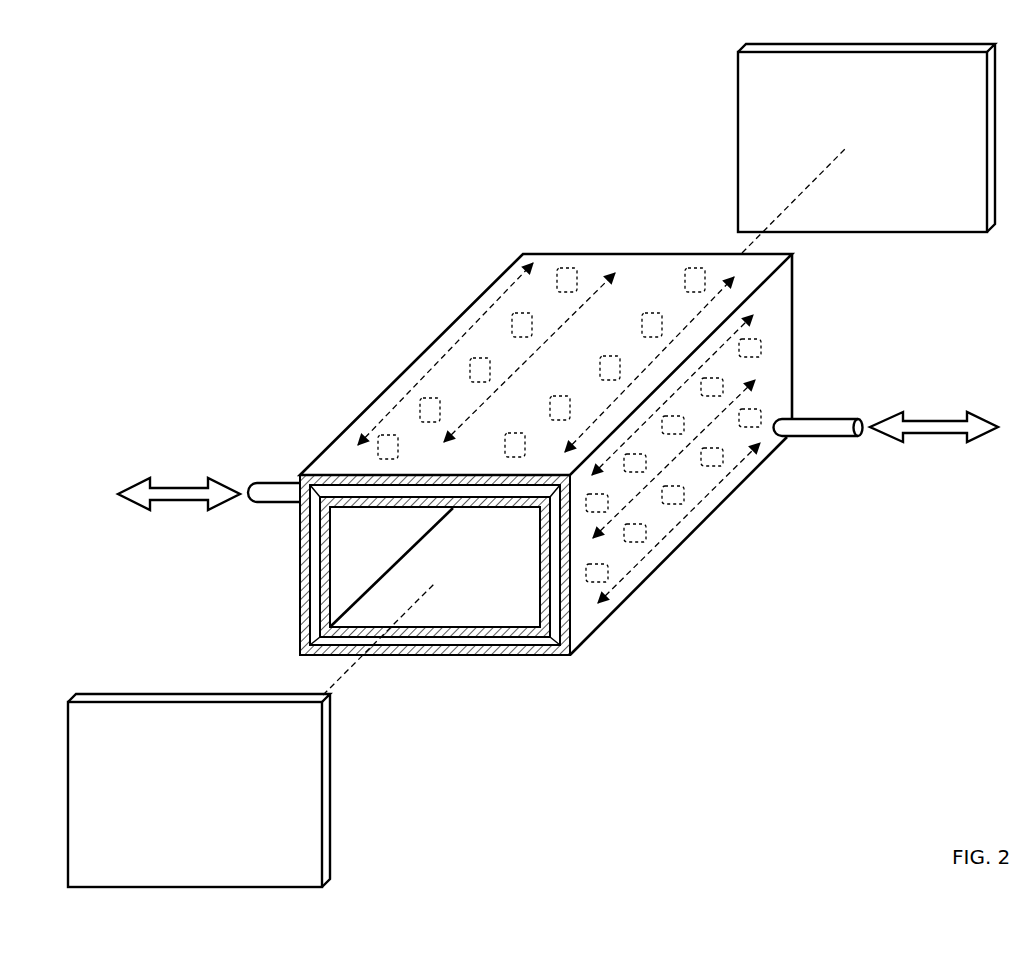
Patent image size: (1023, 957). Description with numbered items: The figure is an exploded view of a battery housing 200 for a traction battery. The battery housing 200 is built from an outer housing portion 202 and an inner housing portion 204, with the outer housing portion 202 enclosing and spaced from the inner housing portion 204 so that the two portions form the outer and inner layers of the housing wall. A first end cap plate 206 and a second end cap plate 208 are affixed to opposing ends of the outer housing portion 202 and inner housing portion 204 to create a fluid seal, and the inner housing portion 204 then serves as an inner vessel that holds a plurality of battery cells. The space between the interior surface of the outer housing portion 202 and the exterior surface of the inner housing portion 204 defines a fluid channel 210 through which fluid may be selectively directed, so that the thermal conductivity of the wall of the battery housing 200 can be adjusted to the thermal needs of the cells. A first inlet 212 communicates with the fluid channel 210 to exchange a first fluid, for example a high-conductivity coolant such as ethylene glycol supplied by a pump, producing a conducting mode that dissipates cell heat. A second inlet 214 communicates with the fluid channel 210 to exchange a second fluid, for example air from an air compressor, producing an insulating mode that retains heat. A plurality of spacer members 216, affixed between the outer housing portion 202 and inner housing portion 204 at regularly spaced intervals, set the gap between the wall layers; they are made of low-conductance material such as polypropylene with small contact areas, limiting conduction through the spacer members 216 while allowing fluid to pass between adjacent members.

The battery housing 200 is at (285, 185).
The outer housing portion 202 is at (302, 533).
The inner housing portion 204 is at (322, 590).
The first end cap plate 206 is at (295, 815).
The second end cap plate 208 is at (768, 82).
The fluid channel 210 is at (556, 640).
The first inlet 212 is at (823, 415).
The second inlet 214 is at (290, 482).
The spacer members 216 is at (556, 278).